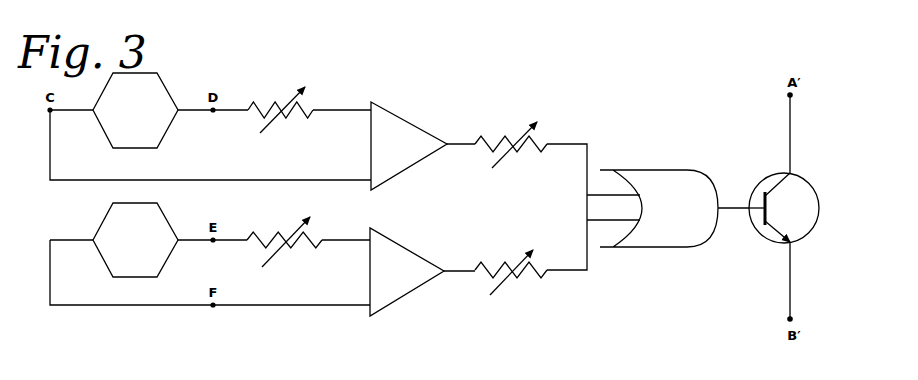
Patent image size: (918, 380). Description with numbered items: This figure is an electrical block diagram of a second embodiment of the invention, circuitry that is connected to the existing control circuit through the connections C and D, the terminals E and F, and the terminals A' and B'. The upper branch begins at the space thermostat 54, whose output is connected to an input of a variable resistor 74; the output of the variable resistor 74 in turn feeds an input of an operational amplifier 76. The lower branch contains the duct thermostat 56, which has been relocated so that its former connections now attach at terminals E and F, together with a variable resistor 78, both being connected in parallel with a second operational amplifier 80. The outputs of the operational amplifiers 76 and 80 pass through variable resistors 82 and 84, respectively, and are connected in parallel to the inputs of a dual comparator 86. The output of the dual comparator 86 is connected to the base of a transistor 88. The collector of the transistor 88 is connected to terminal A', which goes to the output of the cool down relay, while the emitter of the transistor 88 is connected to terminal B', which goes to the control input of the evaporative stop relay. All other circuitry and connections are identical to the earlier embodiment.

The space thermostat 54 is at (165, 90).
The duct thermostat 56 is at (165, 220).
The variable resistor 74 is at (270, 104).
The operational amplifier 76 is at (402, 120).
The variable resistor 78 is at (268, 236).
The operational amplifier 80 is at (401, 249).
The variable resistor 82 is at (515, 140).
The variable resistor 84 is at (497, 264).
The dual comparator 86 is at (667, 170).
The transistor 88 is at (769, 172).